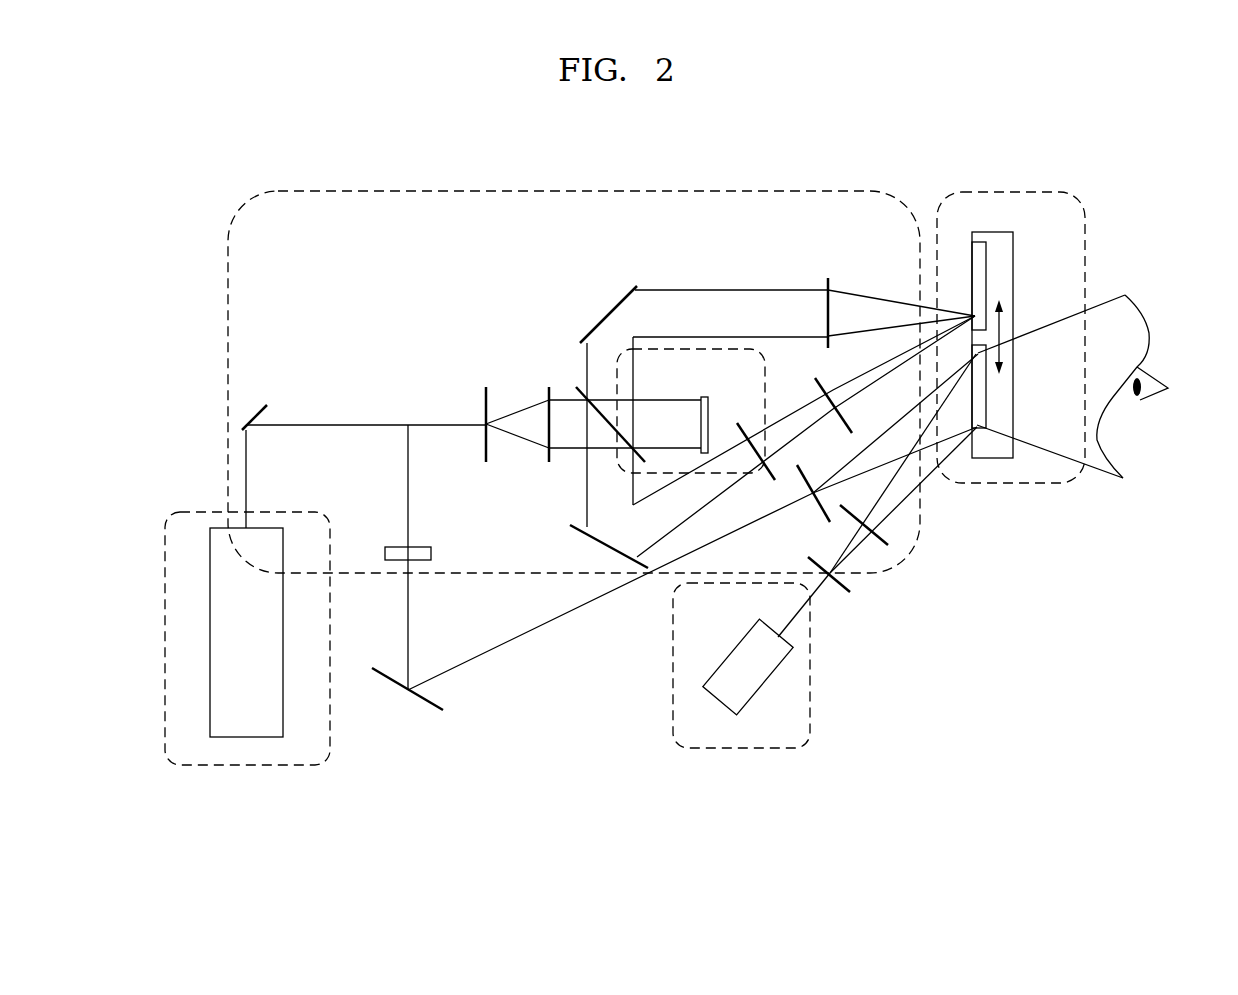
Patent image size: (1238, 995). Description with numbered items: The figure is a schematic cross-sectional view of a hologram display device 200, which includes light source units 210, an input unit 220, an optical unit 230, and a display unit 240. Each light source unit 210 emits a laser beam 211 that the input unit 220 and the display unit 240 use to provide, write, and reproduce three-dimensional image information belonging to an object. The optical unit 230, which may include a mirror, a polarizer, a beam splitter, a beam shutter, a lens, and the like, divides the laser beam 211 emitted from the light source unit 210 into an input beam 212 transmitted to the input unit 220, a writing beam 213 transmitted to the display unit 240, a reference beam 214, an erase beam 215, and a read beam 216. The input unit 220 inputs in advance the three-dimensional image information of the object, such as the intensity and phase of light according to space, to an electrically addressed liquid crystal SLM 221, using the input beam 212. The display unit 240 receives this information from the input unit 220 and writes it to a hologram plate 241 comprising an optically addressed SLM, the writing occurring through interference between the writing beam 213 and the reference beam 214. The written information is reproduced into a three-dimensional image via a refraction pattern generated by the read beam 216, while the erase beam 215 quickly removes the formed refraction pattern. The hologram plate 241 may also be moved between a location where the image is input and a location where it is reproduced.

The hologram display device 200 is at (200, 199).
The light source unit 210 is at (236, 765).
The laser beam 211 is at (243, 477).
The input beam 212 is at (663, 402).
The writing beam 213 is at (735, 286).
The reference beam 214 is at (792, 413).
The erase beam 215 is at (736, 530).
The read beam 216 is at (927, 483).
The input unit 220 is at (617, 377).
The electrically addressed liquid crystal SLM 221 is at (708, 422).
The optical unit 230 is at (228, 321).
The display unit 240 is at (1085, 248).
The hologram plate 241 is at (987, 288).